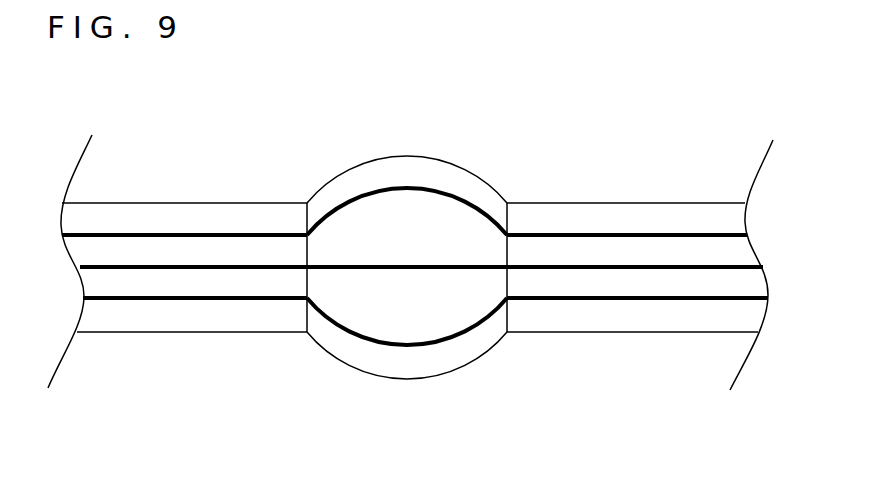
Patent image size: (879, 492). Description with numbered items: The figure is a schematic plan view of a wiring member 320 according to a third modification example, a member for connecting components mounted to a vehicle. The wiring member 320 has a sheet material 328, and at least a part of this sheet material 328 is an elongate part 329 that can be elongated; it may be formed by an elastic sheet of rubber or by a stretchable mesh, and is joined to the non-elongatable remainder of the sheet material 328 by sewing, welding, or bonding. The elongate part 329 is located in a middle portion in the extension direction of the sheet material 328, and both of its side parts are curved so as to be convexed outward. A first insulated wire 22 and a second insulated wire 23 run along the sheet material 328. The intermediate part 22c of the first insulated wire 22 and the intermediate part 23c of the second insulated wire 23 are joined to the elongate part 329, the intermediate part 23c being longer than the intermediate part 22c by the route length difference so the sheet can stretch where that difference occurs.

The wiring member 320 is at (463, 136).
The sheet material 328 is at (215, 337).
The elongate part 329 is at (370, 375).
The first insulated wire 22 is at (645, 267).
The intermediate part of the first insulated wire 22c is at (467, 264).
The second insulated wire 23 is at (705, 235).
The intermediate part of the second insulated wire 23c is at (377, 190).